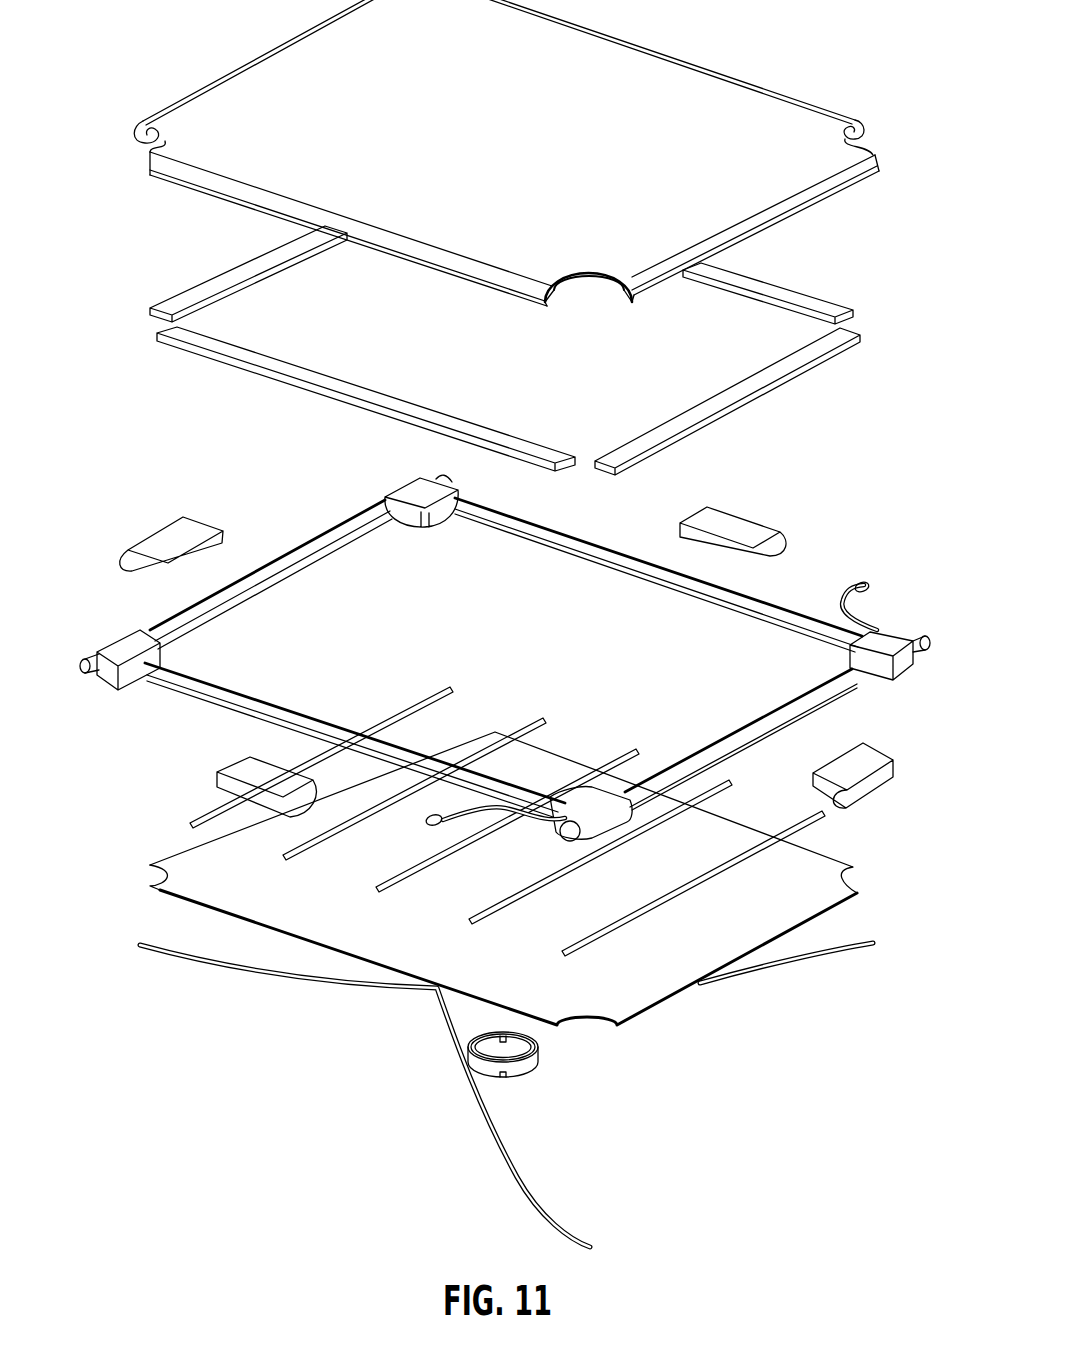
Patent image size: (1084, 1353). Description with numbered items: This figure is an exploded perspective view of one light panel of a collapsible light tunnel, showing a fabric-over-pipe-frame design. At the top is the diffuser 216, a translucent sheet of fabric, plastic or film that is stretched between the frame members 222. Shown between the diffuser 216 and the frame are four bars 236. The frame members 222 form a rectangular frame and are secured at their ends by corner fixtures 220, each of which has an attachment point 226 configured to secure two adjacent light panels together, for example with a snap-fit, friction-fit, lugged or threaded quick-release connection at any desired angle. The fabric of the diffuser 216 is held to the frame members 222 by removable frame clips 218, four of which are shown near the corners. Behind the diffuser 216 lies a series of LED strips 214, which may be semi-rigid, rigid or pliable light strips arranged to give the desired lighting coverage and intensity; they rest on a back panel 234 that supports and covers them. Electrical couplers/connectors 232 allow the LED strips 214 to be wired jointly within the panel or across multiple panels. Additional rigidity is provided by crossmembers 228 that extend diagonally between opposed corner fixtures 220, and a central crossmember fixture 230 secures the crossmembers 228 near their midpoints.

The diffuser 216 is at (638, 62).
The spacer bars 236 is at (252, 265).
The frame members 222 is at (347, 522).
The corner fixtures 220 is at (125, 645).
The attachment point 226 is at (83, 673).
The removable frame clips 218 is at (167, 532).
The LED strips 214 is at (280, 858).
The back panel 234 is at (830, 906).
The crossmembers 228 is at (250, 975).
The electrical couplers/connectors 232 is at (862, 582).
The central crossmember fixture 230 is at (540, 1057).